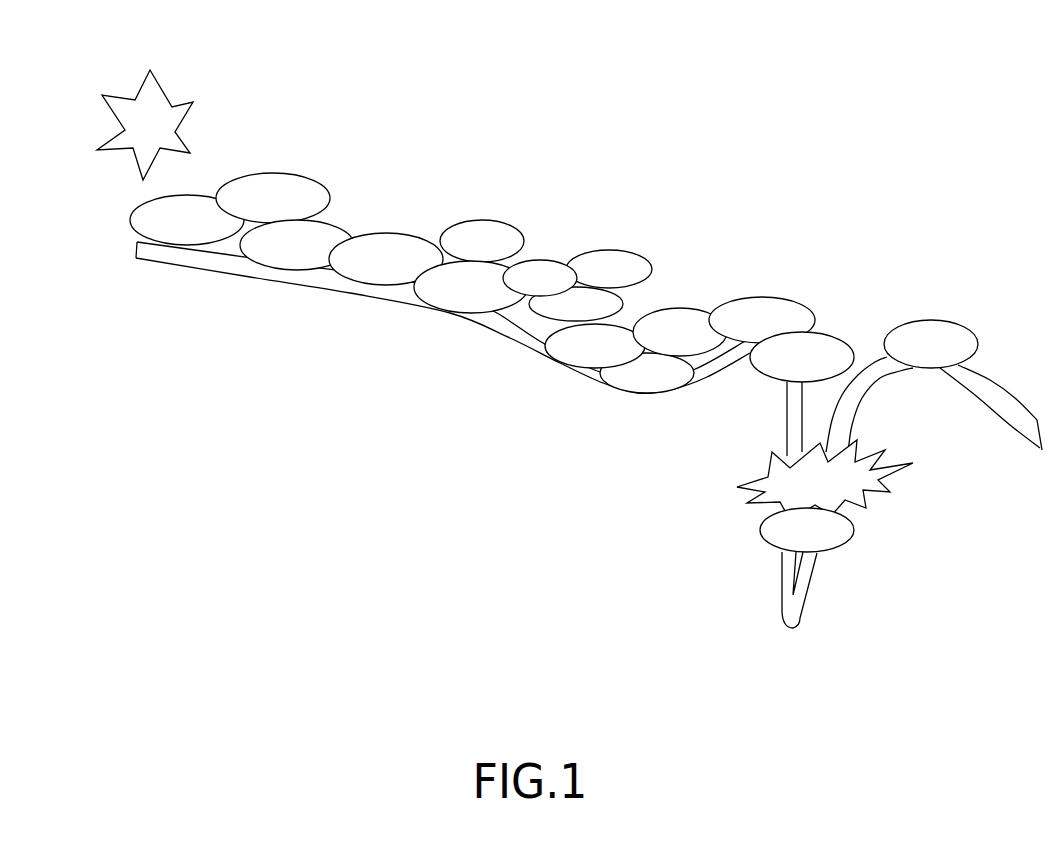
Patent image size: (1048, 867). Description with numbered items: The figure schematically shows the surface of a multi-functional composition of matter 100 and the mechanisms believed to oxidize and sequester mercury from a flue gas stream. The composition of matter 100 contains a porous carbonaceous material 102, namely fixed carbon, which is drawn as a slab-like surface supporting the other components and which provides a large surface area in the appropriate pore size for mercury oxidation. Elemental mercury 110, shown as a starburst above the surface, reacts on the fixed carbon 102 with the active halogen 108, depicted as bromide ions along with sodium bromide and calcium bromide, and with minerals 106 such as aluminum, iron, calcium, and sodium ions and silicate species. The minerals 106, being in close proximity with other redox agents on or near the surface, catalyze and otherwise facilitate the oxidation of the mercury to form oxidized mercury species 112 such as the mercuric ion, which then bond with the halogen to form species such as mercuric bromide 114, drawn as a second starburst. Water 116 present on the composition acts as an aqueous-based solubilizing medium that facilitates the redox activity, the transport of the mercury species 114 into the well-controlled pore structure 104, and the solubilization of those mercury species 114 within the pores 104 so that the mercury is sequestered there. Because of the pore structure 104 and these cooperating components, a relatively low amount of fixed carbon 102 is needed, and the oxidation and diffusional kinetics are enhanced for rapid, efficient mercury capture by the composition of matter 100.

The multi-functional composition of matter 100 is at (236, 312).
The porous carbonaceous material 102 is at (516, 356).
The pore structure 104 is at (802, 603).
The minerals 106 is at (697, 310).
The active halogen 108 is at (426, 241).
The elemental mercury 110 is at (140, 92).
The oxidized mercury species 112 is at (626, 302).
The mercury species HgBr2 114 is at (877, 492).
The water 116 is at (967, 322).